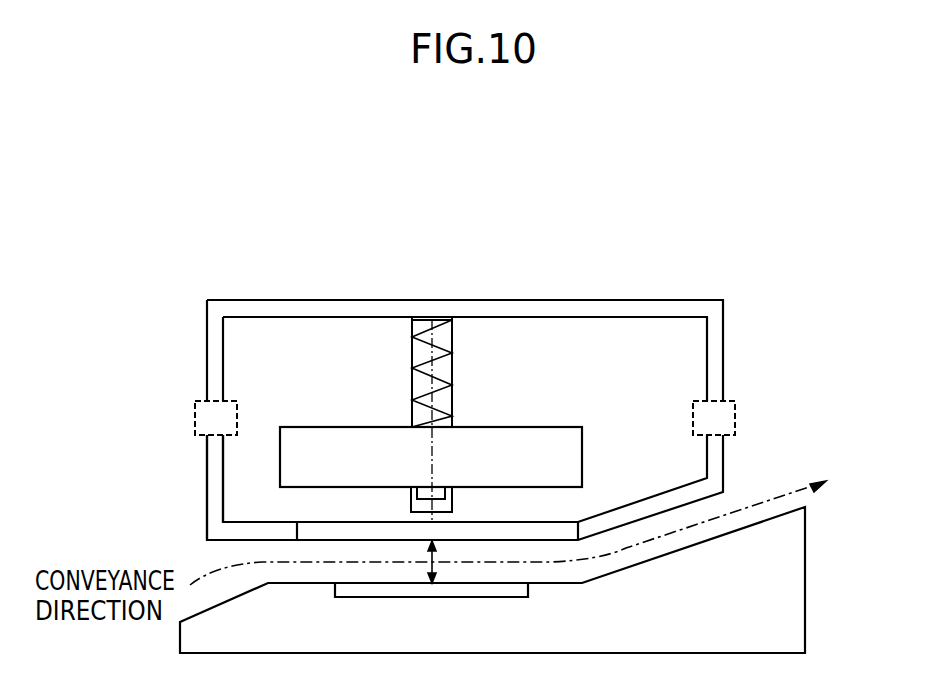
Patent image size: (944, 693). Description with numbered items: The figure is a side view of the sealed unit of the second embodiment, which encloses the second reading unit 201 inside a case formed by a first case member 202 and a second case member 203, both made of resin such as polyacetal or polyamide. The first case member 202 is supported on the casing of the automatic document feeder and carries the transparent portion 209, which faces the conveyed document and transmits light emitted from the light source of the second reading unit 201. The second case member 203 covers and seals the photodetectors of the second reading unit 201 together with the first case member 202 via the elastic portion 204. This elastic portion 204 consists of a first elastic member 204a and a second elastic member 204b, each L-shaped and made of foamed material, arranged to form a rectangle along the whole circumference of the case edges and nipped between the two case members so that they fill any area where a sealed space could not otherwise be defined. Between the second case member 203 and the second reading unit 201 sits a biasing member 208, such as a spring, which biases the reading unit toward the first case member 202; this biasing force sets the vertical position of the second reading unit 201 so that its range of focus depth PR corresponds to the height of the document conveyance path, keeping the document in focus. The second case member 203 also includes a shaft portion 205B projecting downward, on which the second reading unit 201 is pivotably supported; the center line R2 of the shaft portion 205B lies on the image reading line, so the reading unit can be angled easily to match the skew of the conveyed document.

The second reading unit 201 is at (530, 425).
The first case member 202 is at (207, 462).
The second case member 203 is at (320, 299).
The elastic portion 204 is at (483, 387).
The first elastic member 204a is at (193, 418).
The second elastic member 204b is at (735, 417).
The shaft portion 205B is at (411, 426).
The biasing member 208 is at (443, 357).
The transparent portion 209 is at (313, 521).
The center line of the shaft portion R2 is at (431, 460).
The range of focus depth PR is at (435, 565).